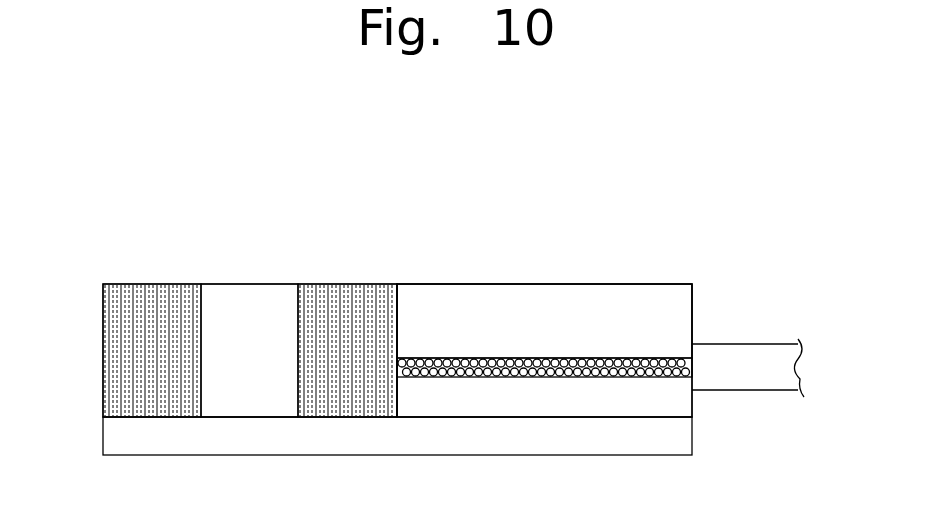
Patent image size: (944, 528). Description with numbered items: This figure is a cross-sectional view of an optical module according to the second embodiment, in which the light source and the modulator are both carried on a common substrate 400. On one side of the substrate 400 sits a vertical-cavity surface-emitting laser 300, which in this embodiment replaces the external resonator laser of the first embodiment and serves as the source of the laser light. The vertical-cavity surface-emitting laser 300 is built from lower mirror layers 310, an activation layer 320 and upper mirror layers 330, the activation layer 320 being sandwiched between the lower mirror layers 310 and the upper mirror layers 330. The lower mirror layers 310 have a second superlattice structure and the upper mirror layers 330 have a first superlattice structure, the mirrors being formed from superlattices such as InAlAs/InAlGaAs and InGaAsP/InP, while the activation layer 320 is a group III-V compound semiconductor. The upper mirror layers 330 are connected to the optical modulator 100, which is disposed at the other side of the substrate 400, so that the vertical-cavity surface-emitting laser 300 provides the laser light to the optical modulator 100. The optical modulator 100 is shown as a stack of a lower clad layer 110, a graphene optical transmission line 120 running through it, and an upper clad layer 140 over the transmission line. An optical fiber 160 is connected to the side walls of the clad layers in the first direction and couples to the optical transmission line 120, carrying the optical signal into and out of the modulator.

The graphene optical modulator 100 is at (468, 203).
The lower clad layer 110 is at (487, 410).
The graphene optical transmission line 120 is at (557, 358).
The upper clad layer 140 is at (642, 327).
The optical fiber 160 is at (745, 357).
The vertical-cavity surface-emitting laser 300 is at (133, 202).
The lower mirror layers 310 is at (103, 251).
The activation layer 320 is at (203, 251).
The upper mirror layers 330 is at (302, 251).
The substrate 400 is at (682, 440).